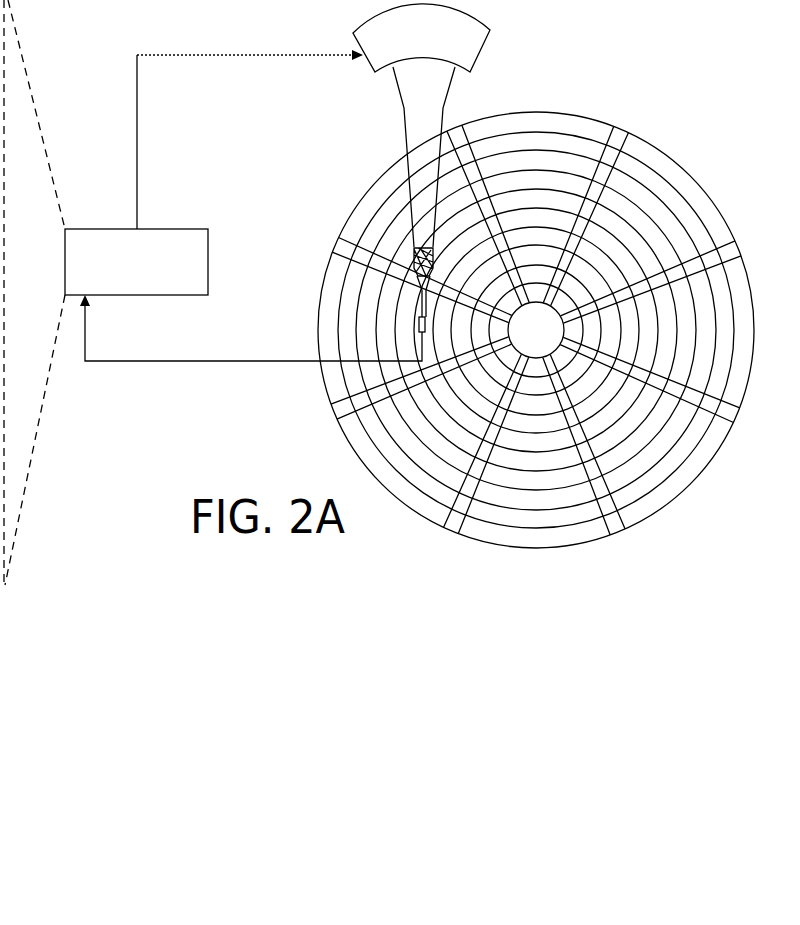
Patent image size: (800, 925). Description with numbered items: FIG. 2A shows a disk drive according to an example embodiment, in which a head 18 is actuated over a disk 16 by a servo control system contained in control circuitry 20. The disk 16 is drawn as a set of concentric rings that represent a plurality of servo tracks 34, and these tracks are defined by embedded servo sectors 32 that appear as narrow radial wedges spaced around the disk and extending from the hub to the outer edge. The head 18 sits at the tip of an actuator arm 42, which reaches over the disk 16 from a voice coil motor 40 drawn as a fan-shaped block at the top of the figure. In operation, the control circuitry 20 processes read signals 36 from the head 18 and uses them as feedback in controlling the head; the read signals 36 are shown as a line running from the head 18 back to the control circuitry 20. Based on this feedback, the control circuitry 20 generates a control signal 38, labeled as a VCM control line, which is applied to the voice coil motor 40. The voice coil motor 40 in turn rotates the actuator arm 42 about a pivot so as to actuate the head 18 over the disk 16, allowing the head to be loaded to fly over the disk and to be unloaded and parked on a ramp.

The disk 16 is at (686, 151).
The head 18 is at (434, 325).
The control circuitry 20 is at (172, 229).
The embedded servo sectors 32 is at (539, 336).
The servo tracks 34 is at (535, 142).
The read signals 36 is at (245, 362).
The control signal 38 is at (137, 105).
The voice coil motor 40 is at (372, 73).
The actuator arm 42 is at (407, 140).